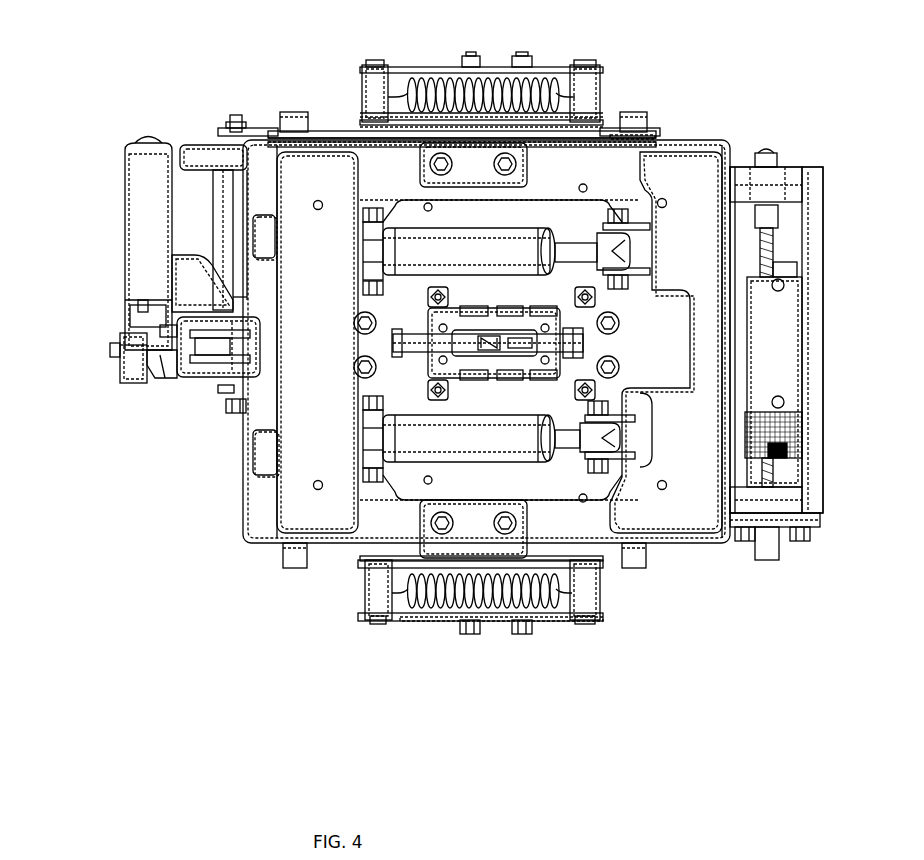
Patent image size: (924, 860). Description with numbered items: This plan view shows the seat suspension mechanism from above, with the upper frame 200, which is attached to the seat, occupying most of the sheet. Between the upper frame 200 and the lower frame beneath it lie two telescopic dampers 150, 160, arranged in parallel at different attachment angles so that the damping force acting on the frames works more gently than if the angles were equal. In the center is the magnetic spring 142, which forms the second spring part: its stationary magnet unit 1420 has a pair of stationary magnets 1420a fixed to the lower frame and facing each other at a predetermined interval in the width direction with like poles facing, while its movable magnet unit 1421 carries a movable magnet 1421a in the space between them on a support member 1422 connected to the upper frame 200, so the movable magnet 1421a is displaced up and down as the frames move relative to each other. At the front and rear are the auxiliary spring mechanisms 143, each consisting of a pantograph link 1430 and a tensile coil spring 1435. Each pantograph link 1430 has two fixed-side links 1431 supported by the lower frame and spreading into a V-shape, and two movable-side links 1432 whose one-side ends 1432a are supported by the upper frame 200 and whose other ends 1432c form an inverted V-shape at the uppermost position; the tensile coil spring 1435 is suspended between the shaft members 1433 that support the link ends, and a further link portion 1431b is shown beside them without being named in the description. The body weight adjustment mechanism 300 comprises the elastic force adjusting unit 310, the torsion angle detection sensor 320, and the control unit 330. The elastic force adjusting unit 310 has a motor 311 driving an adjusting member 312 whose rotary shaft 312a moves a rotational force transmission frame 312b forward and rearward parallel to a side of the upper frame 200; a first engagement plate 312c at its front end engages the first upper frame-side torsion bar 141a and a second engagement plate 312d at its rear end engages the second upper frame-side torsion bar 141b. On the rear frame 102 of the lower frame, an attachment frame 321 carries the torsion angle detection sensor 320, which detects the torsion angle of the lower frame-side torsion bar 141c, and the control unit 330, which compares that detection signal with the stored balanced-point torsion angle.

The rear frame 102 is at (812, 422).
The first upper frame-side torsion bar 141a is at (282, 115).
The second upper frame-side torsion bar 141b is at (642, 112).
The lower frame-side torsion bar 141c is at (760, 247).
The magnetic spring 142 is at (520, 346).
The auxiliary spring mechanism 143 is at (598, 602).
The damper 150 is at (512, 460).
The damper 160 is at (512, 233).
The upper frame 200 is at (256, 499).
The body weight adjustment mechanism 300 is at (147, 327).
The elastic force adjusting unit 310 is at (134, 397).
The motor 311 is at (120, 352).
The adjusting member 312 is at (213, 217).
The rotary shaft 312a is at (205, 255).
The rotational force transmission frame 312b is at (345, 131).
The first engagement plate 312c is at (294, 112).
The second engagement plate 312d is at (628, 112).
The torsion angle detection sensor 320 is at (774, 372).
The attachment frame 321 is at (788, 404).
The control unit 330 is at (803, 447).
The stationary magnet unit 1420 is at (498, 346).
The stationary magnet 1420a is at (482, 297).
The movable magnet unit 1421 is at (483, 345).
The movable magnet 1421a is at (506, 335).
The support member 1422 is at (585, 347).
The pantograph link 1430 is at (467, 343).
The fixed-side link 1431 is at (450, 72).
The spring fixing pin 1431b is at (368, 60).
The movable-side link 1432 is at (408, 128).
The one-side end of movable-side link 1432a is at (505, 154).
The other end of movable-side link 1432c is at (345, 152).
The shaft member 1433 is at (366, 82).
The tensile coil spring 1435 is at (400, 607).